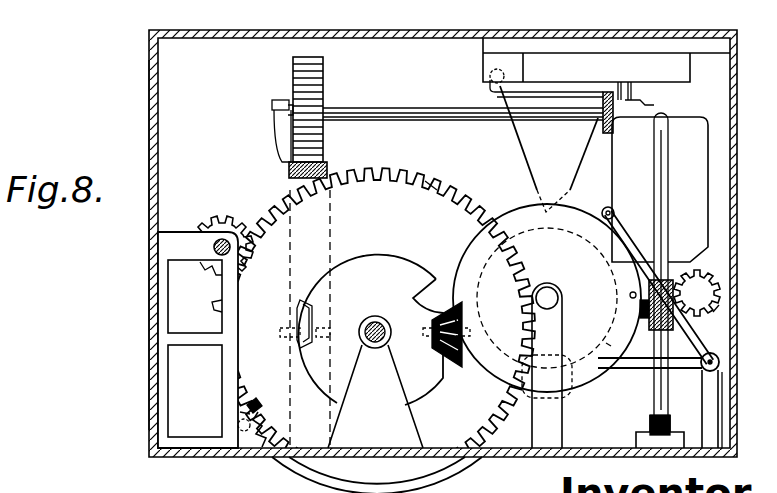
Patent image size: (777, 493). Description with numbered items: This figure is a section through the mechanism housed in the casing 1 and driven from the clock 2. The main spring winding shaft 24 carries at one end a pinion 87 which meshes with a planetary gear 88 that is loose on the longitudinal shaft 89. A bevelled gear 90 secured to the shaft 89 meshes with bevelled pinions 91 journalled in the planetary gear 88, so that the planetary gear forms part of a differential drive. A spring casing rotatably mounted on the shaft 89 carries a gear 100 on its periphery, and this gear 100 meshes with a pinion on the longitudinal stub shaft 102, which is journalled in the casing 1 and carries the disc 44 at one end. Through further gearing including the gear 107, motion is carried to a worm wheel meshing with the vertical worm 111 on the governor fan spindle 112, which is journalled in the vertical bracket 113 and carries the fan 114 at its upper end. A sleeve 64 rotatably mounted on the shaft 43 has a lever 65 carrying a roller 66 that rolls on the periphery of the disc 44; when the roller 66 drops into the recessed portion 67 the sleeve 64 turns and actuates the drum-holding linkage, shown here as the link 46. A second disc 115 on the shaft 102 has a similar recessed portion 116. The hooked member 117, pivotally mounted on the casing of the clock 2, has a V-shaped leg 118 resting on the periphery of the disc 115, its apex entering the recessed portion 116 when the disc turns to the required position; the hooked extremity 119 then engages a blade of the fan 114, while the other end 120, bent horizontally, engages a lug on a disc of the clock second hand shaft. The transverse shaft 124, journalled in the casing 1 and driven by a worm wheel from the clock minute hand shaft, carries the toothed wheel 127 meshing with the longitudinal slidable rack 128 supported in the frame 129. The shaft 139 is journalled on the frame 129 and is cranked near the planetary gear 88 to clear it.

The casing 1 is at (149, 288).
The clock 2 is at (692, 75).
The main spring winding shaft 24 is at (236, 216).
The shaft 43 is at (719, 360).
The disc 44 is at (547, 298).
The link 46 is at (685, 369).
The sleeve 64 is at (731, 348).
The lever 65 is at (634, 252).
The roller 66 is at (614, 212).
The recessed portion 67 is at (607, 340).
The pinion 87 is at (203, 214).
The planetary gear 88 is at (396, 170).
The longitudinal shaft 89 is at (379, 318).
The bevelled gear 90 is at (375, 258).
The bevelled pinions 91 is at (306, 300).
The gear 100 is at (430, 180).
The longitudinal stub shaft 102 is at (552, 296).
The gear 107 is at (697, 293).
The vertical worm 111 is at (709, 312).
The governor fan spindle 112 is at (656, 392).
The vertical bracket 113 is at (650, 428).
The fan 114 is at (660, 264).
The second disc 115 is at (556, 223).
The recessed portion 116 is at (560, 370).
The hooked member 117 is at (512, 126).
The V-shaped leg 118 is at (539, 170).
The hooked extremity 119 is at (655, 104).
The other end 120 is at (597, 82).
The transverse shaft 124 is at (378, 108).
The toothed wheel 127 is at (323, 90).
The rack 128 is at (289, 170).
The frame 129 is at (291, 175).
The shaft 139 is at (250, 400).